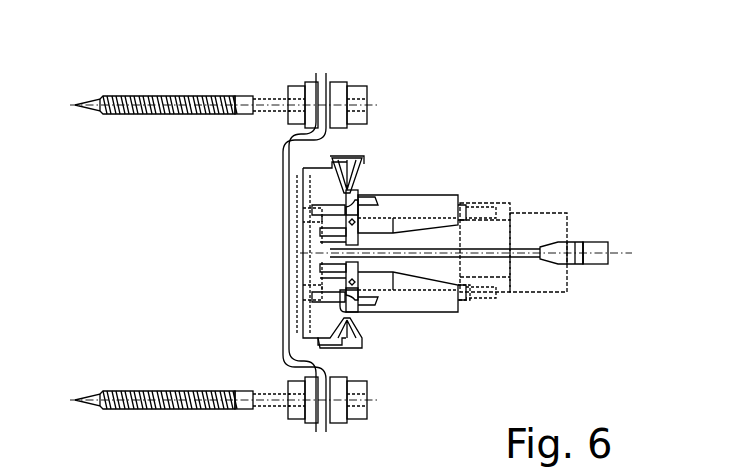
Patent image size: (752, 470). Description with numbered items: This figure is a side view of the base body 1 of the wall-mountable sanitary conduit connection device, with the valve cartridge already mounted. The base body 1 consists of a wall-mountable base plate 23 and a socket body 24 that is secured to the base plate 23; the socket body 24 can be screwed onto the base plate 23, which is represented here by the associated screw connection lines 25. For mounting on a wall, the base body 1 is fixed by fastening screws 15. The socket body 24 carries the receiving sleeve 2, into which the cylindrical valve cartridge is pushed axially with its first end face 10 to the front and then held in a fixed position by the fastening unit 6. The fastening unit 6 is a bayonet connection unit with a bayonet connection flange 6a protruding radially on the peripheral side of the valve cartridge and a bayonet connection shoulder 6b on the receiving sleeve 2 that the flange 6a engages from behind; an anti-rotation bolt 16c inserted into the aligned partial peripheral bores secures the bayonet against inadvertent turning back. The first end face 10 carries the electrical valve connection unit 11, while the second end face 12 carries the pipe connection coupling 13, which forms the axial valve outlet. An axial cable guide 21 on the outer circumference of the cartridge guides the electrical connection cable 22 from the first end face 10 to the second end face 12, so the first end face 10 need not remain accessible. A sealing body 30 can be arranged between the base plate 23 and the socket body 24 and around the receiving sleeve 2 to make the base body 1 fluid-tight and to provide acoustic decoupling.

The base body 1 is at (287, 322).
The receiving sleeve 2 is at (436, 307).
The fastening unit 6 is at (307, 175).
The bayonet connection flange 6a is at (307, 210).
The bayonet connection shoulder 6b is at (355, 201).
The first end face 10 is at (307, 268).
The electrical valve connection unit 11 is at (307, 237).
The second end face 12 is at (467, 293).
The pipe connection coupling 13 is at (553, 213).
The fastening screws 15 is at (148, 100).
The anti-rotation bolt 16c is at (487, 204).
The cable guide 21 is at (355, 253).
The electrical connection cable 22 is at (535, 257).
The base plate 23 is at (283, 350).
The socket body 24 is at (352, 158).
The screw connection lines 25 is at (307, 192).
The sealing body 30 is at (293, 298).